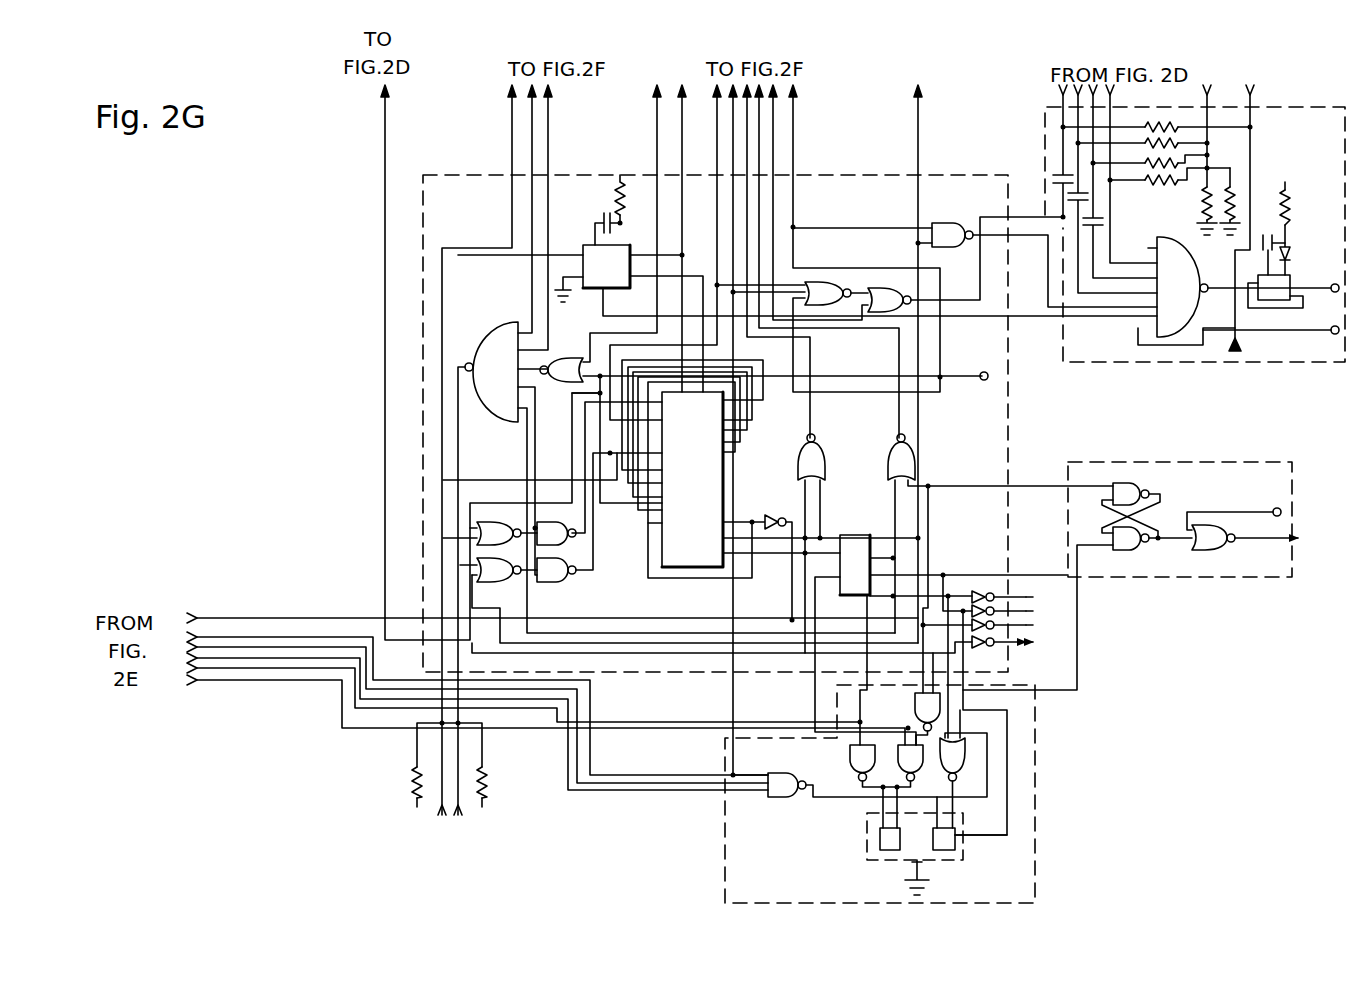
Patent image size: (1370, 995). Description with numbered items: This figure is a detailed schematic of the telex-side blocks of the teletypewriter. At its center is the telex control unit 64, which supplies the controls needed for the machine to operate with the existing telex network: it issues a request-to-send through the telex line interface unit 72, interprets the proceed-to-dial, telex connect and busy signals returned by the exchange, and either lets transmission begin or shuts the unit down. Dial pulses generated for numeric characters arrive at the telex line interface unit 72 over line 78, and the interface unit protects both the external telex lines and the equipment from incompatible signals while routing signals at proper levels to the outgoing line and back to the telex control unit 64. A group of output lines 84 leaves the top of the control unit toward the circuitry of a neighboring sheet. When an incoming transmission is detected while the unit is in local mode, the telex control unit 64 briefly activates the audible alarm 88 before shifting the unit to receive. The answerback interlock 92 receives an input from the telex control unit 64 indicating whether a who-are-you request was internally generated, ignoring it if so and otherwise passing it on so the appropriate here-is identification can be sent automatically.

The telex control unit 64 is at (473, 223).
The telex line interface unit 72 is at (1008, 896).
The line 78 is at (263, 606).
The output lines to FIG. 2F 84 is at (659, 62).
The audible alarm 88 is at (1304, 148).
The answerback interlock 92 is at (1251, 496).